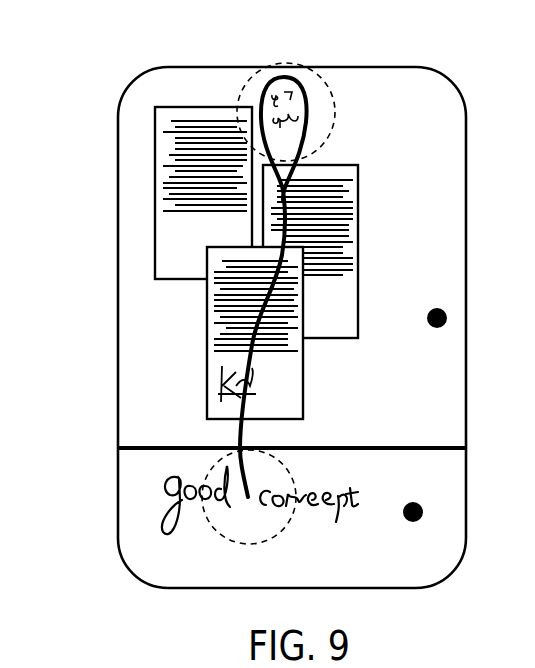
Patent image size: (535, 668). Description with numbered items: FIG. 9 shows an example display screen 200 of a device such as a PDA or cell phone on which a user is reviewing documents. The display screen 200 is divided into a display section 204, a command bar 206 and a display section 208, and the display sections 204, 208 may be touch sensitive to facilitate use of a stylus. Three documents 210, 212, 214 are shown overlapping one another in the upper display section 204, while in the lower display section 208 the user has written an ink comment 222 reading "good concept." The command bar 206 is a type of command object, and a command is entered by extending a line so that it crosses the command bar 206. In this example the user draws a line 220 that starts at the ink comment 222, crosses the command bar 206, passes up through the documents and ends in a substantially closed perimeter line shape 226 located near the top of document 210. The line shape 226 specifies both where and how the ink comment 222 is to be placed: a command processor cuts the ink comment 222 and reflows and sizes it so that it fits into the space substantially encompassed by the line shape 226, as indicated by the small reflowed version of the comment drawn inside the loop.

The display screen 200 is at (104, 73).
The display section 204 is at (437, 308).
The command bar 206 is at (416, 446).
The display section 208 is at (410, 522).
The document 210 is at (210, 107).
The document 212 is at (340, 164).
The document 214 is at (207, 352).
The line 220 is at (240, 438).
The ink comment 222 is at (190, 517).
The line shape 226 is at (300, 85).